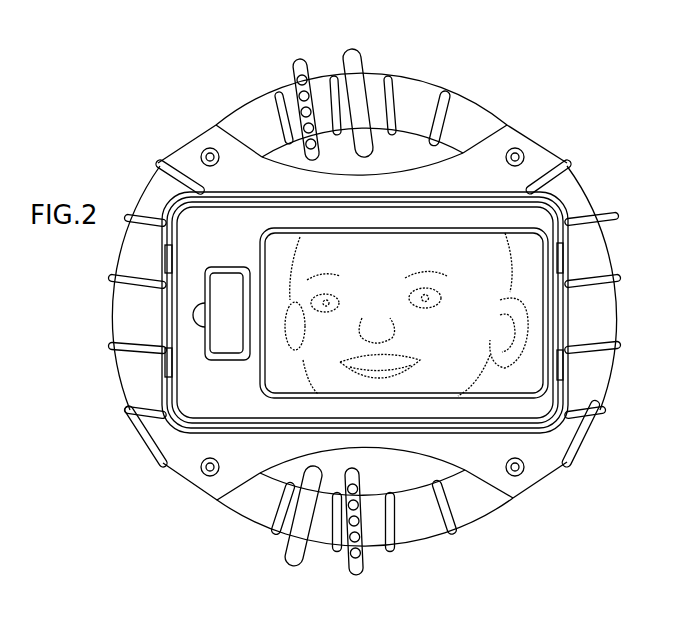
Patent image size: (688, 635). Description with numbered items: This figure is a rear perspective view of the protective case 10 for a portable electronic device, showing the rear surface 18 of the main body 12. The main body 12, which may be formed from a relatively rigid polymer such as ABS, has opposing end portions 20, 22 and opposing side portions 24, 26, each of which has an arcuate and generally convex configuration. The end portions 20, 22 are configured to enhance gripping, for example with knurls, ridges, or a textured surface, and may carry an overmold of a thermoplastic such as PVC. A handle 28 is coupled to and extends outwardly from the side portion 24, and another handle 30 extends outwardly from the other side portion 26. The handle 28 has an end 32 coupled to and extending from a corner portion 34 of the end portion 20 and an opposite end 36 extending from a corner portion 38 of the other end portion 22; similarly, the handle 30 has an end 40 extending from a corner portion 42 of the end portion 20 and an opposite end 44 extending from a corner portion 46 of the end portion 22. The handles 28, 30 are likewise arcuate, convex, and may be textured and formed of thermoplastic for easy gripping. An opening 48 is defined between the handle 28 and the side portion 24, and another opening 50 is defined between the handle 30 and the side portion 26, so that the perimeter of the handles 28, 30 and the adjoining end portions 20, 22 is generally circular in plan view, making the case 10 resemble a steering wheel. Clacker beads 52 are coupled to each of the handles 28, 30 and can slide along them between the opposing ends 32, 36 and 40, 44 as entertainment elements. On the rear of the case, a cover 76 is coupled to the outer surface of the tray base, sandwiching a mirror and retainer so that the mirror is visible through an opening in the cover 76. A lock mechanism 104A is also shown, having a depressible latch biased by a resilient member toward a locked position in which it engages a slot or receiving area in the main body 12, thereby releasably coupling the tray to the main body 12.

The protective case 10 is at (558, 111).
The main body 12 is at (138, 459).
The rear surface 18 is at (522, 502).
The end portion 20 is at (600, 257).
The end portion 22 is at (125, 313).
The side portion 24 is at (467, 150).
The side portion 26 is at (440, 447).
The handle 28 is at (413, 101).
The handle 30 is at (440, 512).
The end 32 is at (508, 127).
The corner portion 34 is at (540, 153).
The end 36 is at (250, 118).
The corner portion 38 is at (188, 163).
The end 40 is at (475, 507).
The corner portion 42 is at (537, 467).
The end 44 is at (263, 500).
The corner portion 46 is at (217, 488).
The opening 48 is at (450, 150).
The opening 50 is at (396, 483).
The clacker beads 52 is at (299, 62).
The cover 76 is at (566, 392).
The lock mechanism 104A is at (223, 335).